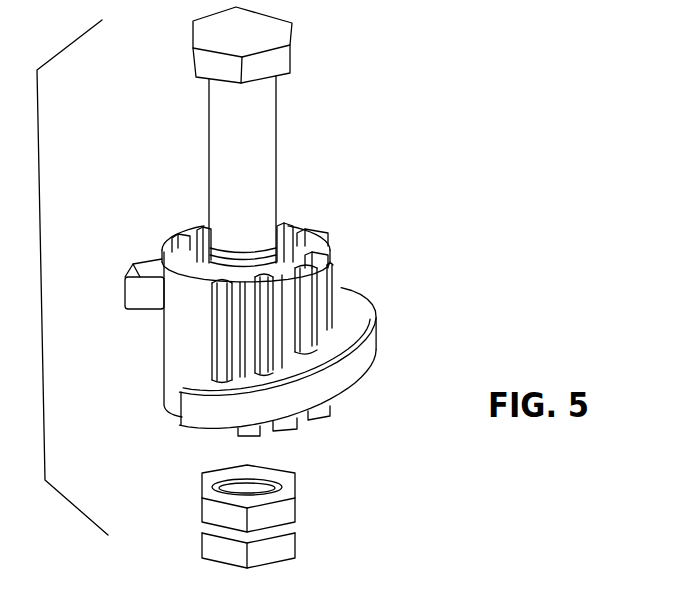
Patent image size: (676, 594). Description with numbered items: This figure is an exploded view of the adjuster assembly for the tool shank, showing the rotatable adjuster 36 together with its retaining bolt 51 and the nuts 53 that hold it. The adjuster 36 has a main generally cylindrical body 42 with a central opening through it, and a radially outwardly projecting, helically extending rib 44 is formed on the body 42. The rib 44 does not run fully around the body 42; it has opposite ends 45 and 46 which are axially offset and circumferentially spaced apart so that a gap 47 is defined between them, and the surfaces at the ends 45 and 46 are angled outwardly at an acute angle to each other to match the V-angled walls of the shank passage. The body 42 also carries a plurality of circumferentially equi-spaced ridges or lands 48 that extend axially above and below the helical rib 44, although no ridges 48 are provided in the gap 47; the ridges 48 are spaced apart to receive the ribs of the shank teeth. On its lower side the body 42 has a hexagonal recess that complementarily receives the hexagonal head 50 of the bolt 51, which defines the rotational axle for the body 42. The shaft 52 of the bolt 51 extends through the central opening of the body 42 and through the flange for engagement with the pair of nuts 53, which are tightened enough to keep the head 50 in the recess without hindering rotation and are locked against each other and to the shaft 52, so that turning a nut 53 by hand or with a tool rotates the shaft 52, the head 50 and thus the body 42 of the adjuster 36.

The adjuster 36 is at (421, 306).
The main body 42 is at (311, 242).
The rib 44 is at (355, 377).
The end of rib 45 is at (140, 310).
The end of rib 46 is at (180, 397).
The gap 47 is at (168, 325).
The ridges 48 is at (318, 288).
The hexagonal head 50 is at (292, 57).
The bolt 51 is at (168, 136).
The shaft 52 is at (277, 157).
The nuts 53 is at (202, 530).